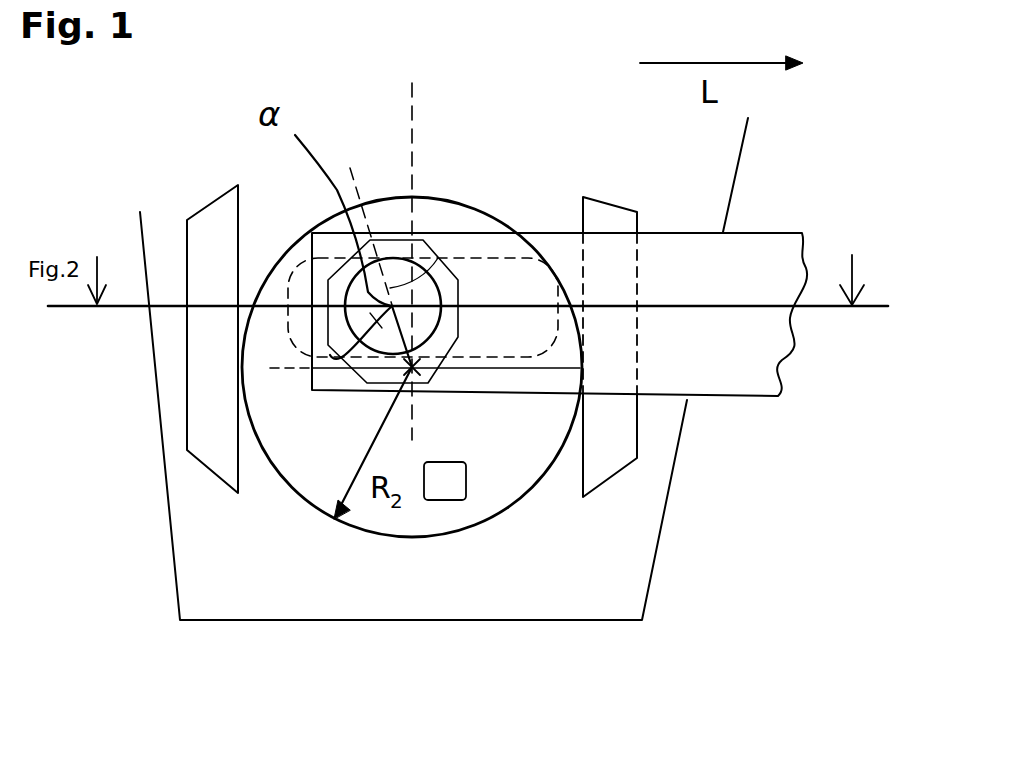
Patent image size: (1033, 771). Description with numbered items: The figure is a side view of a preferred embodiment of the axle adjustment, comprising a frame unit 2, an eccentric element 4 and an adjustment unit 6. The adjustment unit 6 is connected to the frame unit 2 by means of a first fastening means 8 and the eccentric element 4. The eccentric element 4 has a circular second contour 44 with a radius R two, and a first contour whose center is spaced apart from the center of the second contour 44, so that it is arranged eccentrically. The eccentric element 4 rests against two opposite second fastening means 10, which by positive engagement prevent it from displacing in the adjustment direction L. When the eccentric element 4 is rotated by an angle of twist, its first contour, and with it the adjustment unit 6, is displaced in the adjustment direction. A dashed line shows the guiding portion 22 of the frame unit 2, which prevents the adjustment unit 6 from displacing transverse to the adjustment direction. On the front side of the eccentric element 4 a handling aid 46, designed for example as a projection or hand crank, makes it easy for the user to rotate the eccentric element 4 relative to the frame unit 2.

The frame unit 2 is at (620, 600).
The eccentric element 4 is at (430, 510).
The adjustment unit 6 is at (735, 368).
The first fastening means 8 is at (437, 257).
The second fastening means 10 is at (217, 452).
The guiding portion 22 is at (507, 257).
The second contour 44 is at (358, 533).
The handling aid 46 is at (450, 483).